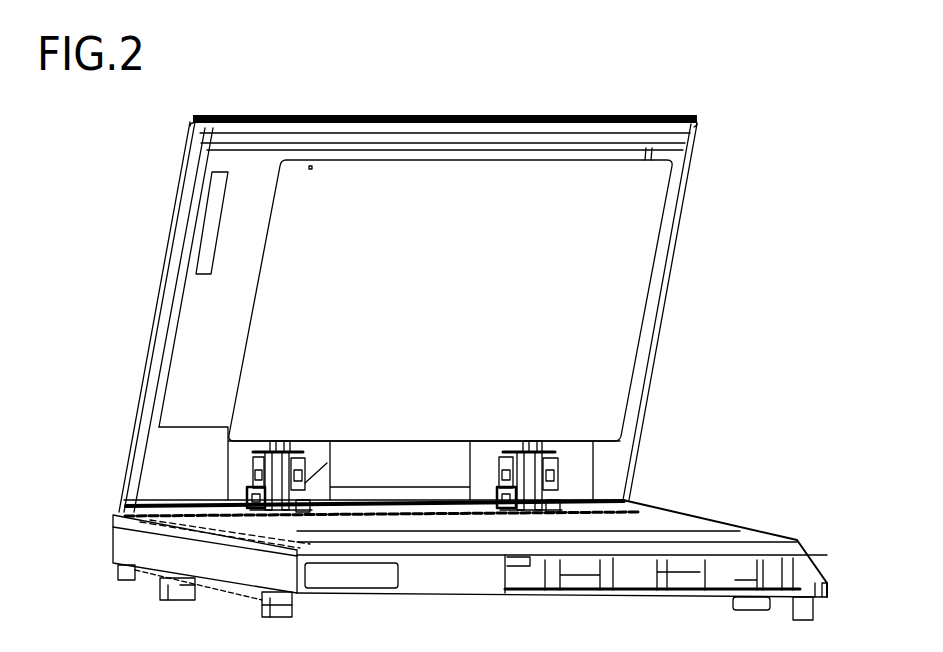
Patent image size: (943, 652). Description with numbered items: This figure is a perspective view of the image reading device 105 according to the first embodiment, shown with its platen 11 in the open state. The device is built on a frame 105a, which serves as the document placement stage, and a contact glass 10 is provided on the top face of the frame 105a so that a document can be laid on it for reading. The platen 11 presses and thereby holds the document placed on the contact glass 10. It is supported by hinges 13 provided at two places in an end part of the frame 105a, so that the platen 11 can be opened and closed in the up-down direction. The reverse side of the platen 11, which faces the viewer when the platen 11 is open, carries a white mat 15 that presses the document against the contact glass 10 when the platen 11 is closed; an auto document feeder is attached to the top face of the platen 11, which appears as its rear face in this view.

The image reading device 105 is at (759, 383).
The frame 105a is at (126, 545).
The contact glass 10 is at (665, 520).
The platen 11 is at (158, 330).
The hinges 13 is at (240, 497).
The white mat 15 is at (630, 275).